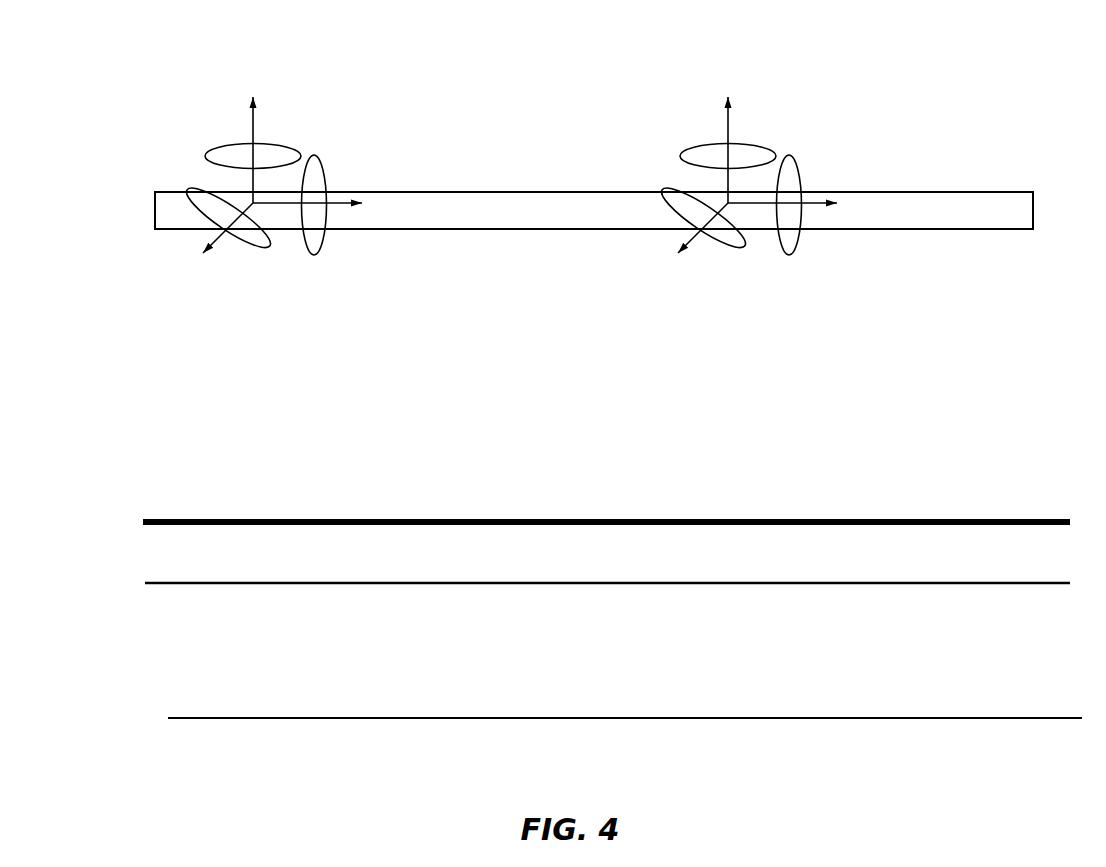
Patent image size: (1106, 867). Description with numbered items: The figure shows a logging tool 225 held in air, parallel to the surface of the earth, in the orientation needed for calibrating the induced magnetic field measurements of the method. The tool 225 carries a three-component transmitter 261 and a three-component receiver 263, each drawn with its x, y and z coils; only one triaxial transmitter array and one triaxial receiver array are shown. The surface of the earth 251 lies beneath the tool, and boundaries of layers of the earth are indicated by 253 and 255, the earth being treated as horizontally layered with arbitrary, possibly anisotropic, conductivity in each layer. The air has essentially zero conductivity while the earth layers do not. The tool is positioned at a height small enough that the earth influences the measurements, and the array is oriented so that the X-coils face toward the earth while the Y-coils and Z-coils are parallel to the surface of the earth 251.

The tool 225 is at (522, 153).
The three-component transmitter 261 is at (173, 89).
The three-component receiver 263 is at (806, 89).
The surface of the earth 251 is at (143, 522).
The boundary of earth layer 253 is at (145, 583).
The boundary of earth layer 255 is at (168, 718).